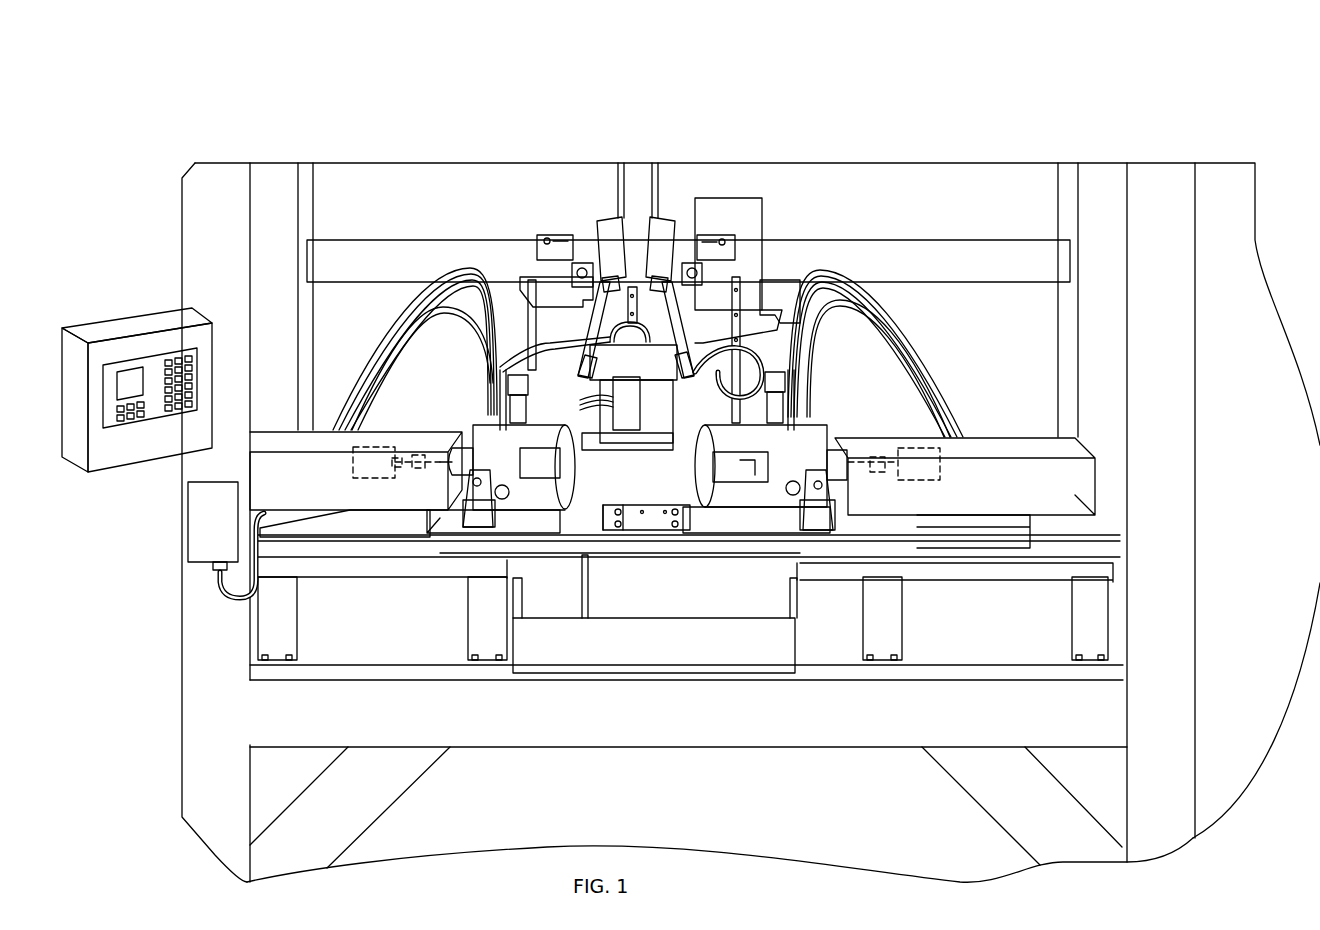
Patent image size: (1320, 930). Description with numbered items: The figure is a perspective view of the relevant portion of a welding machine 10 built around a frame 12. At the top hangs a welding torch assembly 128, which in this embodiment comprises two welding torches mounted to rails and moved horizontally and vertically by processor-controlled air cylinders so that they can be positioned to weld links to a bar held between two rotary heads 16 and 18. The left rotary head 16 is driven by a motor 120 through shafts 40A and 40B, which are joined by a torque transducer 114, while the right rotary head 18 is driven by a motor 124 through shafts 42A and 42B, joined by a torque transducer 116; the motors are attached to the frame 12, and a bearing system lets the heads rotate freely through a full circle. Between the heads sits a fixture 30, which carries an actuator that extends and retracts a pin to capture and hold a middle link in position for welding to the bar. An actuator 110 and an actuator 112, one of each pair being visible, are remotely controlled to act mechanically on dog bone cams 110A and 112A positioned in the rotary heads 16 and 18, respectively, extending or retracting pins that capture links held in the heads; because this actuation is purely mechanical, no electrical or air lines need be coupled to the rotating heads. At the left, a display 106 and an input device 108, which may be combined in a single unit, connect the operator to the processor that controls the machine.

The welding machine 10 is at (1233, 140).
The frame 12 is at (195, 695).
The rotary head 16 is at (532, 497).
The rotary head 18 is at (733, 493).
The fixture 30 is at (645, 473).
The shaft 40A is at (395, 462).
The shaft 40B is at (427, 468).
The shaft 42A is at (900, 468).
The shaft 42B is at (858, 470).
The display 106 is at (163, 431).
The input device 108 is at (166, 318).
The actuator 110 is at (528, 330).
The dog bone cam 110A is at (497, 497).
The actuator 112 is at (775, 385).
The dog bone cam 112A is at (793, 527).
The torque transducer 114 is at (423, 447).
The torque transducer 116 is at (872, 455).
The motor 120 is at (353, 462).
The motor 124 is at (940, 465).
The welding torch assembly 128 is at (650, 150).